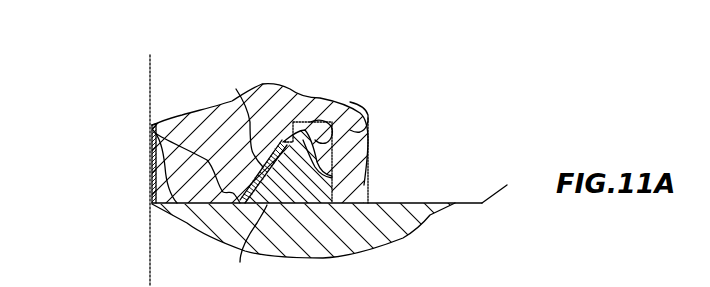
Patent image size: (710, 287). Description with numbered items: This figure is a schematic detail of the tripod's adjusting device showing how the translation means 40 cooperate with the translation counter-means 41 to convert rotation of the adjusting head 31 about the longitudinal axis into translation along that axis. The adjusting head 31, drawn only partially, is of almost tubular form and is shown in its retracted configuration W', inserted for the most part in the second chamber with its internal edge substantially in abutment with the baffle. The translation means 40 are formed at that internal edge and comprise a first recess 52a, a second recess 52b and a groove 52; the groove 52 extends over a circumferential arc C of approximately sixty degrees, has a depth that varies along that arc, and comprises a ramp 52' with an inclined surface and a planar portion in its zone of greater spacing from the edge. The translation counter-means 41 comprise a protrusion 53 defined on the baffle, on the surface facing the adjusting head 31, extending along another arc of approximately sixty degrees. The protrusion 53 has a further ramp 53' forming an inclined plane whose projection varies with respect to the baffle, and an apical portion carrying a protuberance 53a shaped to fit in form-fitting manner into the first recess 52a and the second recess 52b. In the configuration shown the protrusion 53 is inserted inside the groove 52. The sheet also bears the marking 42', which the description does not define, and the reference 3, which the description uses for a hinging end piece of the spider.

The retracted configuration W' is at (106, 168).
The translation means 40 is at (167, 114).
The edge of the cap layer 42' is at (235, 112).
The another ramp 53' is at (263, 129).
The groove 52 is at (270, 127).
The ramp 52' is at (304, 205).
The first recess 52a is at (153, 141).
The second recess 52b is at (152, 172).
The protrusion 53 is at (287, 162).
The protuberance 53a is at (330, 175).
The adjusting head 31 is at (357, 157).
The hinging end piece 3 is at (497, 190).
The translation counter-means 41 is at (194, 222).
The other circumferential arc C is at (250, 242).